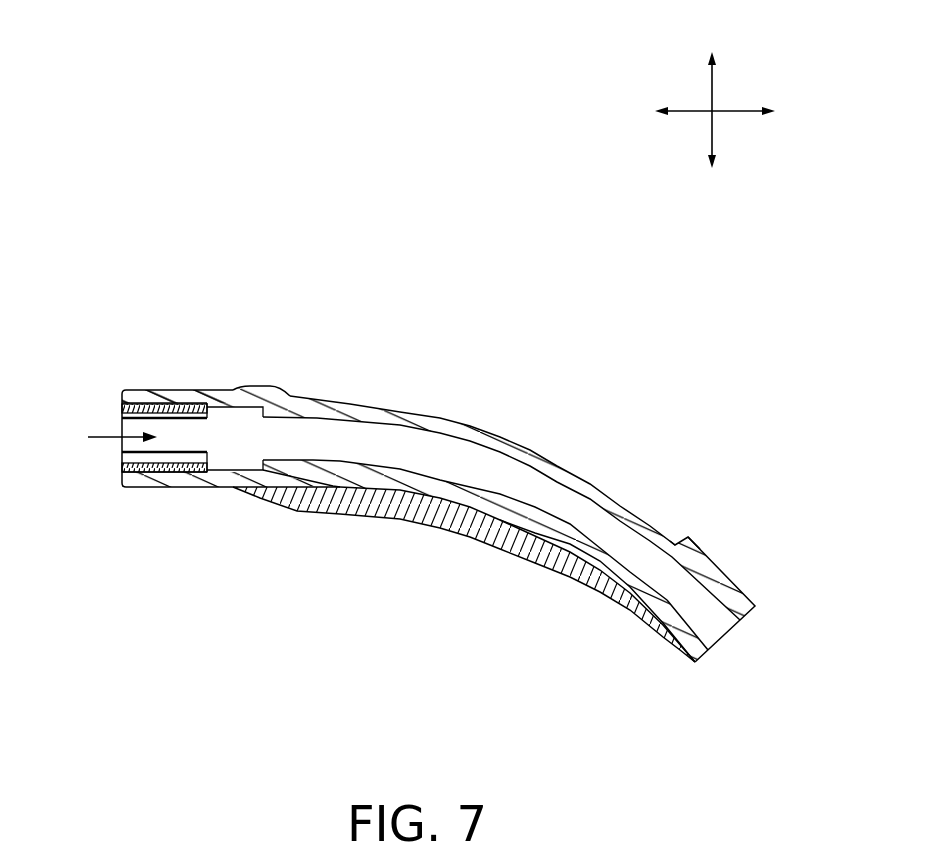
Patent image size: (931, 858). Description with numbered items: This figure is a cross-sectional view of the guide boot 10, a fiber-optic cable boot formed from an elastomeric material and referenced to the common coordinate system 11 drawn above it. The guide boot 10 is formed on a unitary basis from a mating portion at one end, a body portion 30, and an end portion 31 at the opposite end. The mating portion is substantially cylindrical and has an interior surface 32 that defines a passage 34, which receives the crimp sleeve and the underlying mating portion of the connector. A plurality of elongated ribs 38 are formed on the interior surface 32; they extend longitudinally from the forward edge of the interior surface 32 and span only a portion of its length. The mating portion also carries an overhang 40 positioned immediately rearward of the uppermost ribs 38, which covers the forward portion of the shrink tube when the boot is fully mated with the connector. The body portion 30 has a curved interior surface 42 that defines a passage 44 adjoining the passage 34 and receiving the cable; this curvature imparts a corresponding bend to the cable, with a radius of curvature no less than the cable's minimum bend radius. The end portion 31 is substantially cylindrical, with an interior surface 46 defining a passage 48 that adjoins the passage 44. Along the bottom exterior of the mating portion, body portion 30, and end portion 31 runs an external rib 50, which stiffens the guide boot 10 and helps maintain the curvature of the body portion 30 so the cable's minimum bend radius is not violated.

The guide boot 10 is at (682, 420).
The coordinate system 11 is at (735, 85).
The body portion 30 is at (466, 411).
The end portion 31 is at (760, 585).
The interior surface 32 is at (225, 435).
The passage 34 is at (99, 437).
The ribs 38 is at (120, 411).
The overhang 40 is at (267, 386).
The interior surface 42 is at (360, 437).
The passage 44 is at (505, 474).
The interior surface 46 is at (677, 583).
The passage 48 is at (712, 623).
The external rib 50 is at (447, 548).